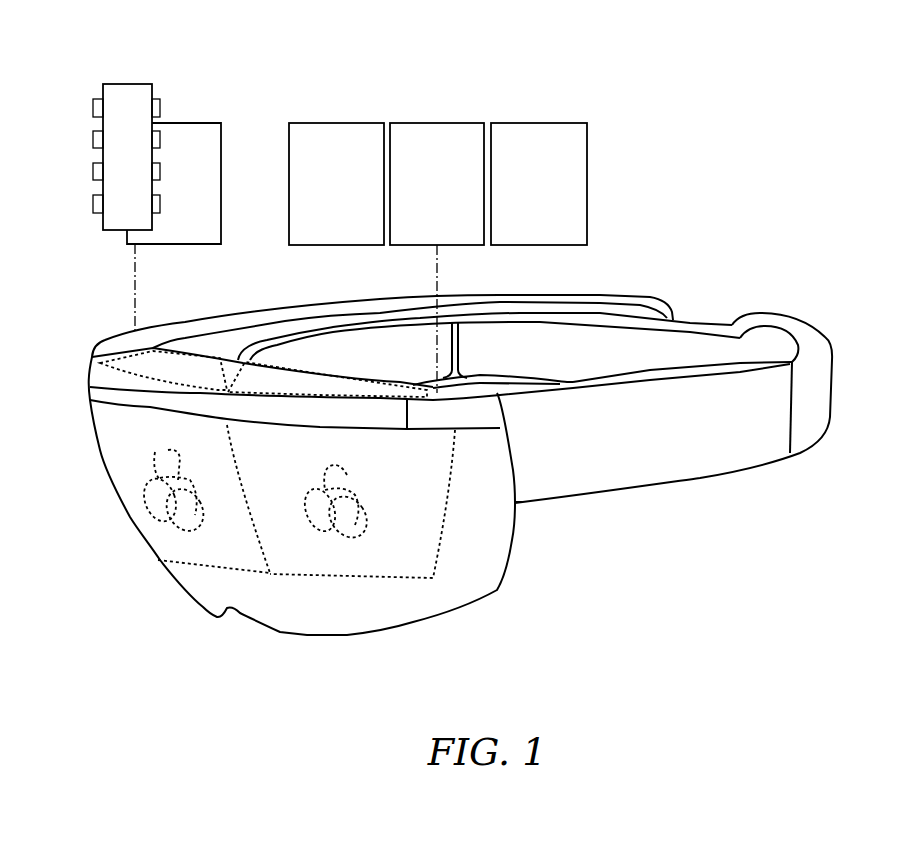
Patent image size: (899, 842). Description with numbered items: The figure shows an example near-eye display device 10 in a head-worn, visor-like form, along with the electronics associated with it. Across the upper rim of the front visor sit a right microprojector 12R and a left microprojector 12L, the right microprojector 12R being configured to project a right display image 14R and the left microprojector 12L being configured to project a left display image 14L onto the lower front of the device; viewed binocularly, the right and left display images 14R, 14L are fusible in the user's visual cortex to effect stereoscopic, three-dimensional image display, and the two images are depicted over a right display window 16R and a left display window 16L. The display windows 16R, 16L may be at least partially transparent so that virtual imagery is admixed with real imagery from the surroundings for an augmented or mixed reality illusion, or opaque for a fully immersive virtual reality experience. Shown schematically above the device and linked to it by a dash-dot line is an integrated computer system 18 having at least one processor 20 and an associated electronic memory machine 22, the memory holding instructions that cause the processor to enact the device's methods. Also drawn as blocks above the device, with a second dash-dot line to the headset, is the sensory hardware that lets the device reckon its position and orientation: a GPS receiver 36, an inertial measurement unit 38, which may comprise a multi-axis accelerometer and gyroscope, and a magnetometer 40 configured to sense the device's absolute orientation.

The near-eye display device 10 is at (856, 256).
The right microprojector 12R is at (163, 370).
The left microprojector 12L is at (327, 379).
The right display image 14R is at (168, 450).
The left display image 14L is at (347, 475).
The right display window 16R is at (213, 560).
The left display window 16L is at (399, 568).
The integrated computer system 18 is at (55, 109).
The processor 20 is at (167, 192).
The electronic memory machine 22 is at (119, 166).
The global positioning-system (GPS) receiver 36 is at (329, 205).
The inertial measurement unit (IMU) 38 is at (429, 205).
The magnetometer 40 is at (531, 205).